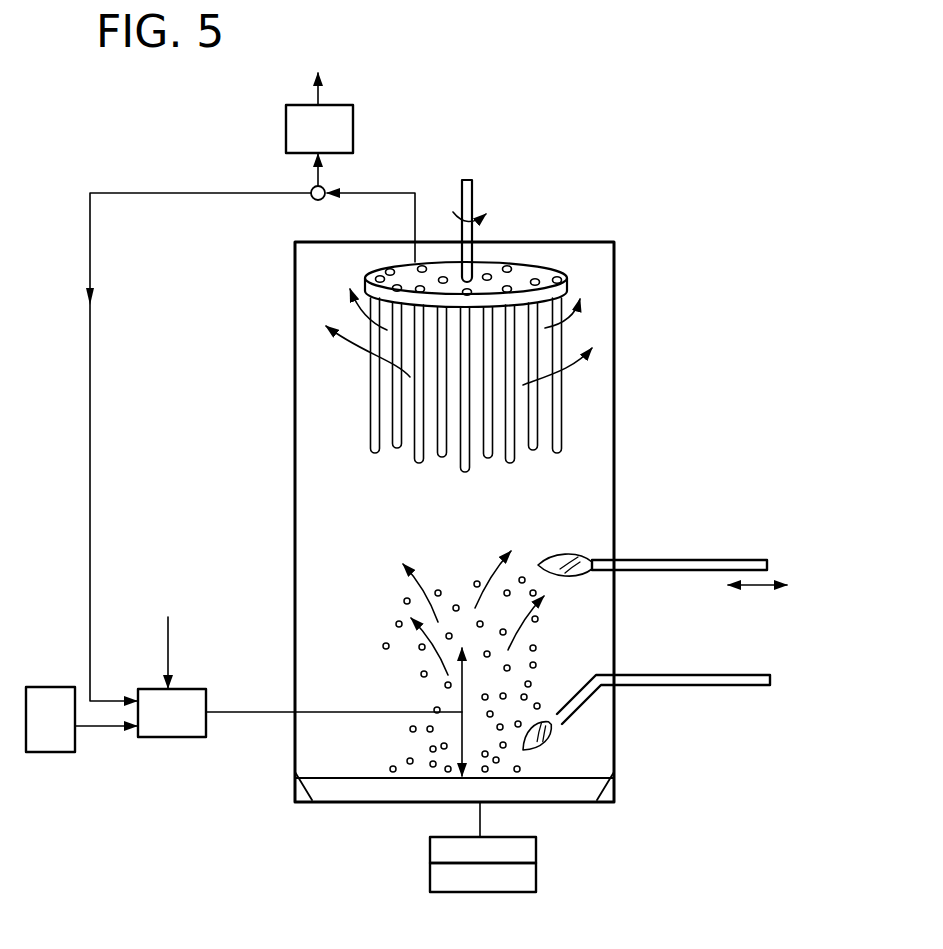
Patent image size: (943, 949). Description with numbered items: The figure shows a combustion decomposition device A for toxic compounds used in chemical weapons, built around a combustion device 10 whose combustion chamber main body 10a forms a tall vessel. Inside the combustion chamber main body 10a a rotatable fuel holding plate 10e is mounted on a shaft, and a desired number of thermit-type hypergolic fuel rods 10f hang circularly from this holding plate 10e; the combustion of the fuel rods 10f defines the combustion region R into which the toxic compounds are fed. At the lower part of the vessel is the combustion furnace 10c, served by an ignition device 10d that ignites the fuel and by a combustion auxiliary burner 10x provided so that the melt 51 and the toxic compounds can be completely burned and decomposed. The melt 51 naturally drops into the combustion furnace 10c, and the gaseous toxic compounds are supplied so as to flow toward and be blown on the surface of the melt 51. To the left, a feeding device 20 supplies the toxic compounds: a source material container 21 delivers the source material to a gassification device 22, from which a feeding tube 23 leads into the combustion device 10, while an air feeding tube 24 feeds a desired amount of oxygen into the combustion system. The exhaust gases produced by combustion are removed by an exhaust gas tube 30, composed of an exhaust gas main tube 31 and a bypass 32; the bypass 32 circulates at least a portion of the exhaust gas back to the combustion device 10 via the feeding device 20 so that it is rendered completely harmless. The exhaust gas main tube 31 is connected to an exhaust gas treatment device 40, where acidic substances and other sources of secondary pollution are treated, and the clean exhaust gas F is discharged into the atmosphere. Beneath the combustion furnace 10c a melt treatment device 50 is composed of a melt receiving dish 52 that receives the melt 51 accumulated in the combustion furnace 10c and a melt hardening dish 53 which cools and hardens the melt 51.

The combustion decomposition device A is at (626, 238).
The combustion device 10 is at (631, 277).
The combustion chamber main body 10a is at (615, 292).
The combustion furnace 10c is at (588, 800).
The ignition device 10d is at (632, 572).
The fuel holding plate 10e is at (530, 277).
The thermit-type hypergolic fuel rods 10f is at (372, 380).
The combustion auxiliary burner 10x is at (730, 687).
The feeding device 20 is at (139, 758).
The source material container 21 is at (50, 752).
The gassification device 22 is at (177, 738).
The feeding tube 23 is at (277, 713).
The air feeding tube 24 is at (169, 644).
The exhaust gas tube 30 is at (366, 178).
The exhaust gas main tube 31 is at (415, 228).
The bypass 32 is at (90, 233).
The exhaust gas treatment device 40 is at (369, 132).
The clean exhaust gas F is at (332, 97).
The combustion region R is at (451, 663).
The melt treatment device 50 is at (397, 824).
The melt 51 is at (532, 647).
The melt receiving dish 52 is at (528, 848).
The melt hardening dish 53 is at (528, 878).